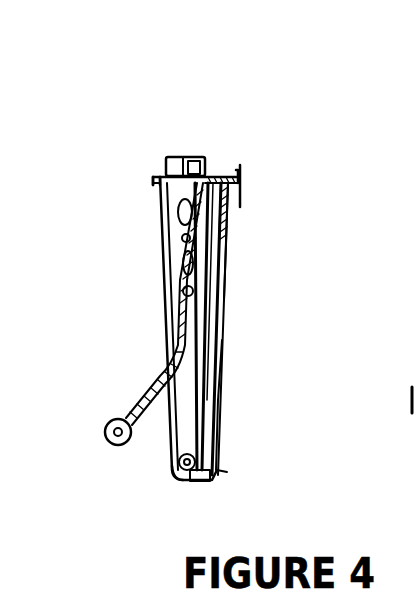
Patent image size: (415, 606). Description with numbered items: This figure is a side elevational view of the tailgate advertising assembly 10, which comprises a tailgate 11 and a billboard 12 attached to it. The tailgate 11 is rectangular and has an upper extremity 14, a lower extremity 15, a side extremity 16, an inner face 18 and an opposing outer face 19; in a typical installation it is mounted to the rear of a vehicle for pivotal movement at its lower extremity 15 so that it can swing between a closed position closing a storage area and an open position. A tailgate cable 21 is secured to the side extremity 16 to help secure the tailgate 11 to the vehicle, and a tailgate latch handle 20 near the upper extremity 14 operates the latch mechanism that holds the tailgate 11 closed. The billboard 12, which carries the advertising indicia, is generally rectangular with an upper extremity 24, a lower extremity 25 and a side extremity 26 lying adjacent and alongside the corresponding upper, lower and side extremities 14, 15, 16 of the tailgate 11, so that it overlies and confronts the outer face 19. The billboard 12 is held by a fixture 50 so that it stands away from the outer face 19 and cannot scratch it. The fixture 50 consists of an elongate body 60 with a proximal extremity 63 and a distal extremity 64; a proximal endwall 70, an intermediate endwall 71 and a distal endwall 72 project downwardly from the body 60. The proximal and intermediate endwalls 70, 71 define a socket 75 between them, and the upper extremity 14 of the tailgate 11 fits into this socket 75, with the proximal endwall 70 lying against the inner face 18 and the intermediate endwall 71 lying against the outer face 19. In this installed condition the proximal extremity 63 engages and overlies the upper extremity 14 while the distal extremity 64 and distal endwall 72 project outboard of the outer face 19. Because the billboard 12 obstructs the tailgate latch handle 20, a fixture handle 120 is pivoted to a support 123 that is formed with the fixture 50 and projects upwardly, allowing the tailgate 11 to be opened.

The tailgate advertising assembly 10 is at (277, 225).
The tailgate 11 is at (168, 317).
The billboard 12 is at (230, 348).
The upper extremity 14 is at (185, 158).
The lower extremity 15 is at (173, 483).
The side extremity 16 is at (190, 417).
The inner face 18 is at (170, 285).
The outer face 19 is at (222, 390).
The tailgate latch handle 20 is at (230, 282).
The tailgate cable 21 is at (150, 389).
The upper extremity 24 is at (240, 180).
The lower extremity 25 is at (225, 473).
The side extremity 26 is at (226, 418).
The fixture 50 is at (158, 181).
The elongate body 60 is at (218, 177).
The proximal extremity 63 is at (165, 163).
The distal extremity 64 is at (236, 177).
The proximal endwall 70 is at (170, 192).
The intermediate endwall 71 is at (167, 240).
The distal endwall 72 is at (233, 228).
The socket 75 is at (170, 213).
The fixture handle 120 is at (176, 158).
The support 123 is at (198, 176).